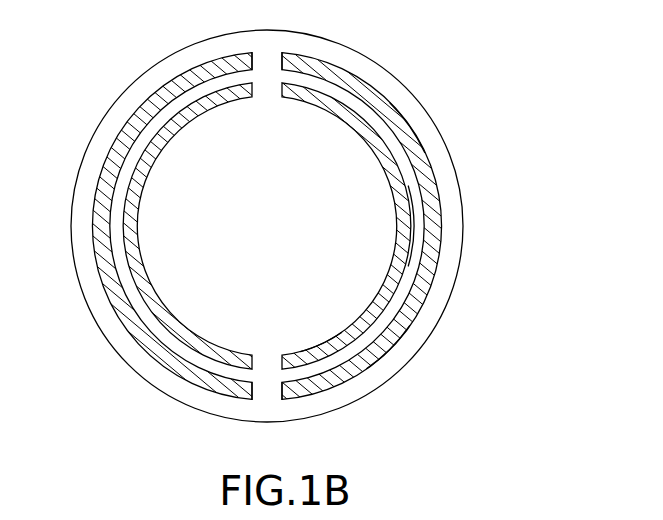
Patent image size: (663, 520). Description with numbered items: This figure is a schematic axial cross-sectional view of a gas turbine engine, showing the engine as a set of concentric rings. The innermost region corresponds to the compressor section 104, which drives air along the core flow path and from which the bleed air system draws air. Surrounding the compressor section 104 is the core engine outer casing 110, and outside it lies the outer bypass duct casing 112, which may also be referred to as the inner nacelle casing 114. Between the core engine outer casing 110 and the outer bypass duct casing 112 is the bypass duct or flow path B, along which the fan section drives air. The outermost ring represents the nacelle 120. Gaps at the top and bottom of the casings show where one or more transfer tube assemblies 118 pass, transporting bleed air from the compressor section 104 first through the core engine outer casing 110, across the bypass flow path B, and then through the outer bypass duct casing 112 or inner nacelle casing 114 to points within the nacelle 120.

The nacelle 120 is at (374, 73).
The outer bypass duct casing 112 is at (402, 117).
The inner nacelle casing 114 is at (420, 153).
The compressor section 104 is at (375, 227).
The core engine outer casing 110 is at (315, 354).
The bypass duct or flow path B is at (386, 328).
The transfer tube assemblies 118 is at (266, 88).